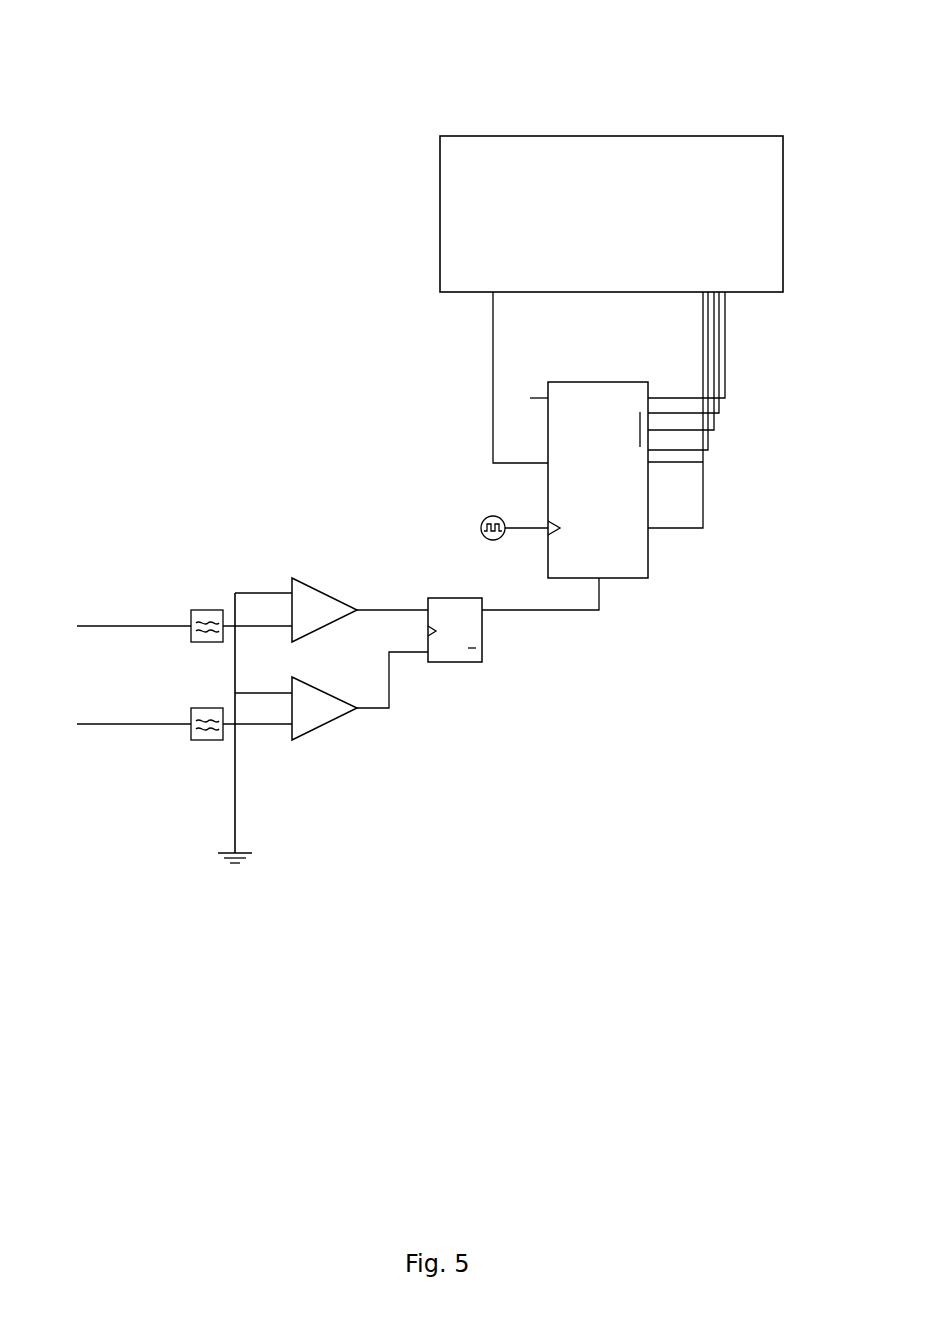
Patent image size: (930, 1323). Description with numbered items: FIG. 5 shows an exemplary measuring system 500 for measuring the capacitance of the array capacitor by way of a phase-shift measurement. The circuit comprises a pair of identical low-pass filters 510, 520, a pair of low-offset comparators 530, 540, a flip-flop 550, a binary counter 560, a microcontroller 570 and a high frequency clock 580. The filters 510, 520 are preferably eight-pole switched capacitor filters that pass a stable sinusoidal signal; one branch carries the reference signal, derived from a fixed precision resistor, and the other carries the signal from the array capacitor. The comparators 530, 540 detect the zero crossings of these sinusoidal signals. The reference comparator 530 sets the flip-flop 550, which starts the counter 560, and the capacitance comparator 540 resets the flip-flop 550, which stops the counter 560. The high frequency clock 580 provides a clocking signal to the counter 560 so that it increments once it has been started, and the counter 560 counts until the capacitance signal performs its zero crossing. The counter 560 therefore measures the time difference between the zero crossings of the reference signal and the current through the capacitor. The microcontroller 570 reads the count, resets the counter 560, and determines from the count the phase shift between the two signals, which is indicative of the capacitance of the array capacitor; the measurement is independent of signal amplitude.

The measuring system 500 is at (588, 64).
The low-pass filter 510 is at (205, 610).
The low-pass filter 520 is at (205, 708).
The reference comparator 530 is at (326, 595).
The capacitance comparator 540 is at (326, 694).
The flip-flop 550 is at (482, 600).
The binary counter 560 is at (548, 382).
The microcontroller 570 is at (783, 215).
The high frequency clock 580 is at (481, 535).